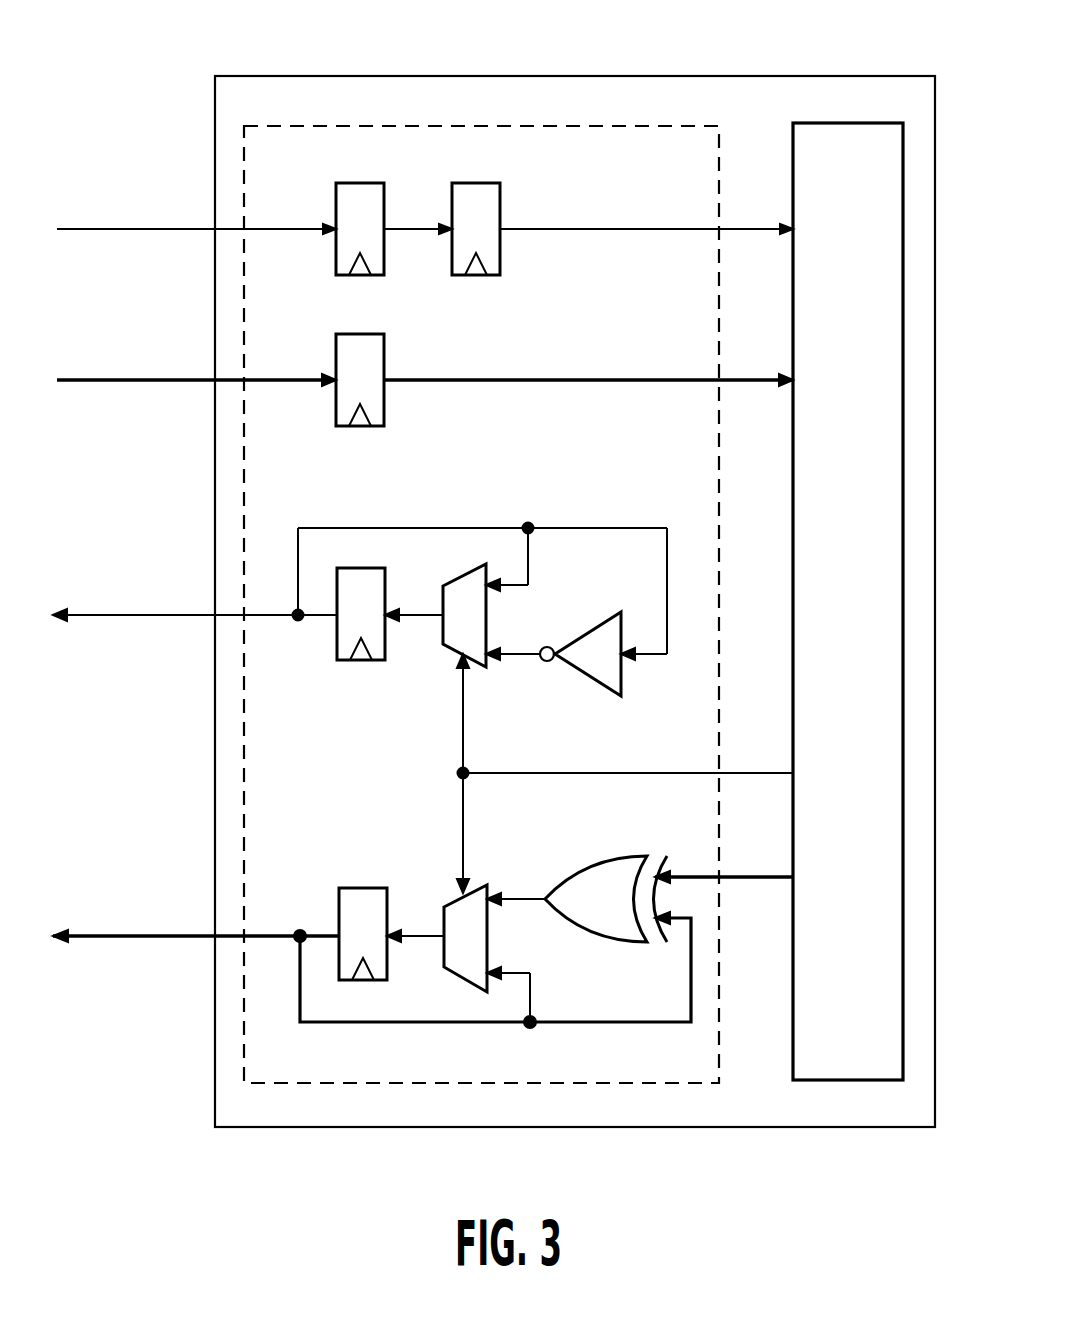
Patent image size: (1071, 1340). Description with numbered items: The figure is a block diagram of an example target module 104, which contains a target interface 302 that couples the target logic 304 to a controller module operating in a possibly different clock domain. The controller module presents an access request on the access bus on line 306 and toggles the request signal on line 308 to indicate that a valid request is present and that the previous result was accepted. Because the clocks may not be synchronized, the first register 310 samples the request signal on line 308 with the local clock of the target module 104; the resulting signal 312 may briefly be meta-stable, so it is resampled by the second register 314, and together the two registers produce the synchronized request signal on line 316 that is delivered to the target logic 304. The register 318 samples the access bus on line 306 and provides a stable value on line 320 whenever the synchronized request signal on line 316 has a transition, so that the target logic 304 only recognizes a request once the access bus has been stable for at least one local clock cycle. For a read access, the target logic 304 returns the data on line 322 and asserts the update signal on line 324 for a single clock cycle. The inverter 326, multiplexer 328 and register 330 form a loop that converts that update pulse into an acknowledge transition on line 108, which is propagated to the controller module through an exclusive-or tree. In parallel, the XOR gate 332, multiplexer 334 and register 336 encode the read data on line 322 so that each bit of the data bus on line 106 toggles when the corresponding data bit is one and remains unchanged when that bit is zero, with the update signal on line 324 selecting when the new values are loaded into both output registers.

The target module 104 is at (688, 75).
The target interface 302 is at (357, 125).
The target logic 304 is at (830, 123).
The access bus line 306 is at (118, 384).
The request signal line 308 is at (118, 232).
The first register 310 is at (336, 200).
The signal 312 is at (408, 232).
The second register 314 is at (501, 258).
The synchronized request signal line 316 is at (632, 228).
The register 318 is at (336, 420).
The access request line 320 is at (628, 378).
The data line 322 is at (755, 876).
The update signal line 324 is at (755, 772).
The inverter 326 is at (586, 678).
The multiplexer 328 is at (452, 650).
The register 330 is at (337, 655).
The XOR gate 332 is at (587, 860).
The multiplexer 334 is at (452, 898).
The register 336 is at (355, 886).
The acknowledge line 108 is at (96, 620).
The data bus line 106 is at (125, 940).